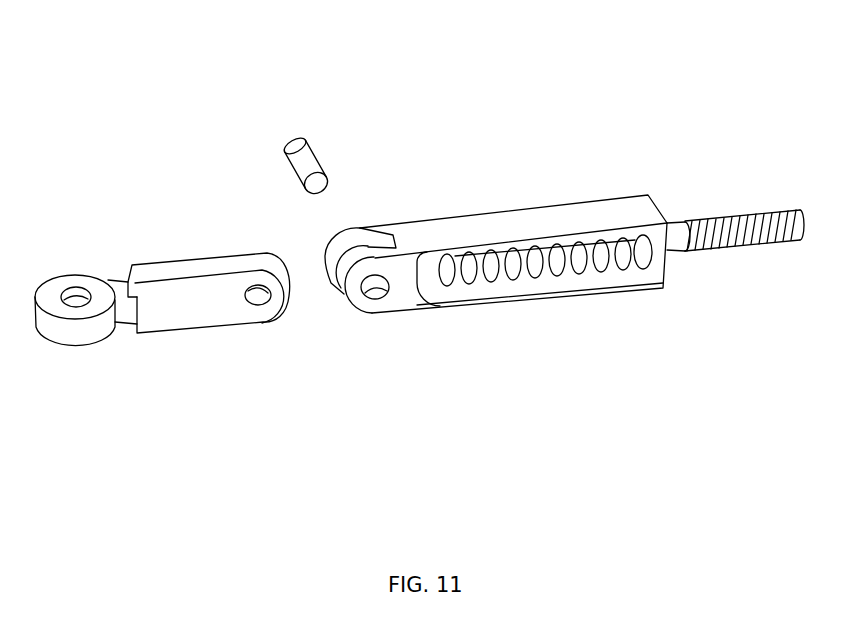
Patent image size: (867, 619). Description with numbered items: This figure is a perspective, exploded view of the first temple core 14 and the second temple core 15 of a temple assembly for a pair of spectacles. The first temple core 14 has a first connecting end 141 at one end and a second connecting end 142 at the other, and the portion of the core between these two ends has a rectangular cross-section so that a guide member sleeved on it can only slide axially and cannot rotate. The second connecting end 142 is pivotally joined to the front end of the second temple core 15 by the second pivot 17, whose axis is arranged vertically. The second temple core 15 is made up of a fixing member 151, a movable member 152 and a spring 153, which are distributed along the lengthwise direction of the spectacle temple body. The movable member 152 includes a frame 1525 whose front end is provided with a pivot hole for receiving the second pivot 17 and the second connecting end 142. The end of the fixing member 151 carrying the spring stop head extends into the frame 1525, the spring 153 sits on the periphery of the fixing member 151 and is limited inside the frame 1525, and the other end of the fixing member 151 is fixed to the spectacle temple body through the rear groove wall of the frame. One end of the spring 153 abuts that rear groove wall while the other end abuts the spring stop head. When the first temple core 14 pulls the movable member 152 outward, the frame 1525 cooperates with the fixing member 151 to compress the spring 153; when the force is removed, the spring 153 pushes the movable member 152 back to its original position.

The first temple core 14 is at (285, 485).
The first connecting end 141 is at (103, 340).
The second connecting end 142 is at (262, 323).
The second temple core 15 is at (505, 88).
The fixing member 151 is at (720, 247).
The movable member 152 is at (482, 227).
The frame 1525 is at (480, 300).
The spring 153 is at (570, 300).
The second pivot 17 is at (297, 152).